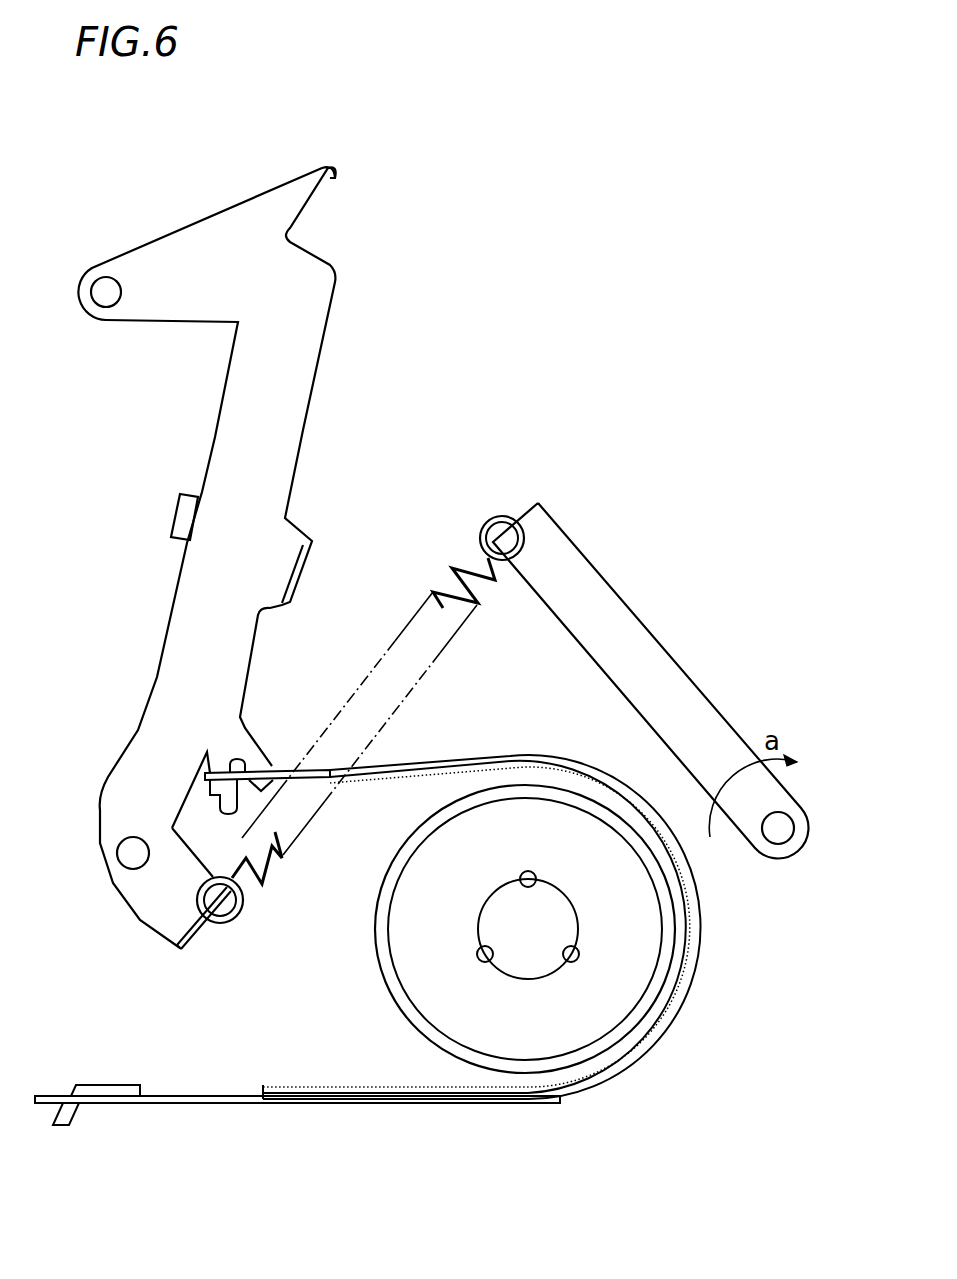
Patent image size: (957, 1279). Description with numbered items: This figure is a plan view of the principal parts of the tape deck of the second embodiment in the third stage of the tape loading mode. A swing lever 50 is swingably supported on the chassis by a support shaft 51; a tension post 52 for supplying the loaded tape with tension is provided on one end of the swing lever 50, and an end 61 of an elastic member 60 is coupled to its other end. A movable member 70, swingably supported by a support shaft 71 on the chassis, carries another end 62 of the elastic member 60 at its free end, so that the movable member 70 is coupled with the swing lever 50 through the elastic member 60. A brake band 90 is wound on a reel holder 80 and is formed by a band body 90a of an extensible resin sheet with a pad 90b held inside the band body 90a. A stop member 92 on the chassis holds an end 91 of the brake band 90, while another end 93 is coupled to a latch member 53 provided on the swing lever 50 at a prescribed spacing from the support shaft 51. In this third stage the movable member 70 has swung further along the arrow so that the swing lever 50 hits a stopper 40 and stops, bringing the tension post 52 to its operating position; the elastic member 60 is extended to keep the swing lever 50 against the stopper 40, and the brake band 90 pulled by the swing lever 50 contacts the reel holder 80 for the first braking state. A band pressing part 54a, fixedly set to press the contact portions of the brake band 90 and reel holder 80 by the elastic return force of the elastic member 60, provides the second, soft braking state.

The stopper 40 is at (173, 515).
The swing lever 50 is at (214, 405).
The support shaft 51 is at (133, 853).
The tension post 52 is at (104, 293).
The latch member 53 is at (226, 790).
The band pressing part 54a is at (287, 547).
The elastic member 60 is at (318, 808).
The end of the elastic member 61 is at (225, 925).
The another end of the elastic member 62 is at (497, 516).
The movable member 70 is at (683, 650).
The support shaft 71 is at (790, 828).
The reel holder 80 is at (412, 967).
The brake band 90 is at (708, 1002).
The band body 90a is at (700, 927).
The pad 90b is at (688, 962).
The end of the brake band 91 is at (132, 1105).
The stop member 92 is at (78, 1108).
The another end of the brake band 93 is at (213, 775).